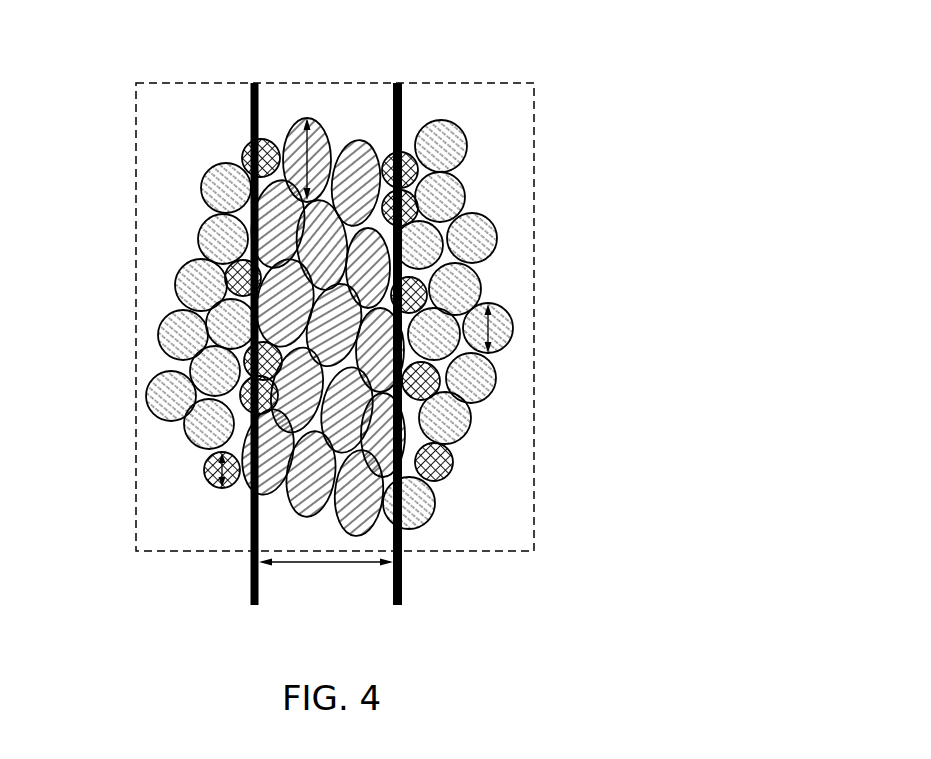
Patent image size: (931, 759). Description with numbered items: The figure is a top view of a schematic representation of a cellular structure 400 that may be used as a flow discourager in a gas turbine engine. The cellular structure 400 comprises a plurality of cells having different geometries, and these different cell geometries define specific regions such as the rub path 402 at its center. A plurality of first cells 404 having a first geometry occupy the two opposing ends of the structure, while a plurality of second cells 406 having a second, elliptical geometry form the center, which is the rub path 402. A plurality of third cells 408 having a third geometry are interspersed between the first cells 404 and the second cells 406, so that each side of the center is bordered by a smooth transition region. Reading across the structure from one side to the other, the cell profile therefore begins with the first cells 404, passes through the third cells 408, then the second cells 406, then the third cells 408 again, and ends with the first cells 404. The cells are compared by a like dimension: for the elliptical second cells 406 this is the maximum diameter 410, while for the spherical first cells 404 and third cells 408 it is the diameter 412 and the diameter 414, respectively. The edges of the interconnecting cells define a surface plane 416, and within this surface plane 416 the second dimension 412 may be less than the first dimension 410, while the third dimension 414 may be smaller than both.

The cellular structure 400 is at (357, 315).
The rub path 402 is at (327, 563).
The first cells 404 is at (482, 230).
The second cells 406 is at (357, 147).
The third cells 408 is at (270, 140).
The maximum diameter 410 is at (309, 118).
The diameter 412 is at (493, 328).
The diameter 414 is at (208, 472).
The surface plane 416 is at (536, 311).